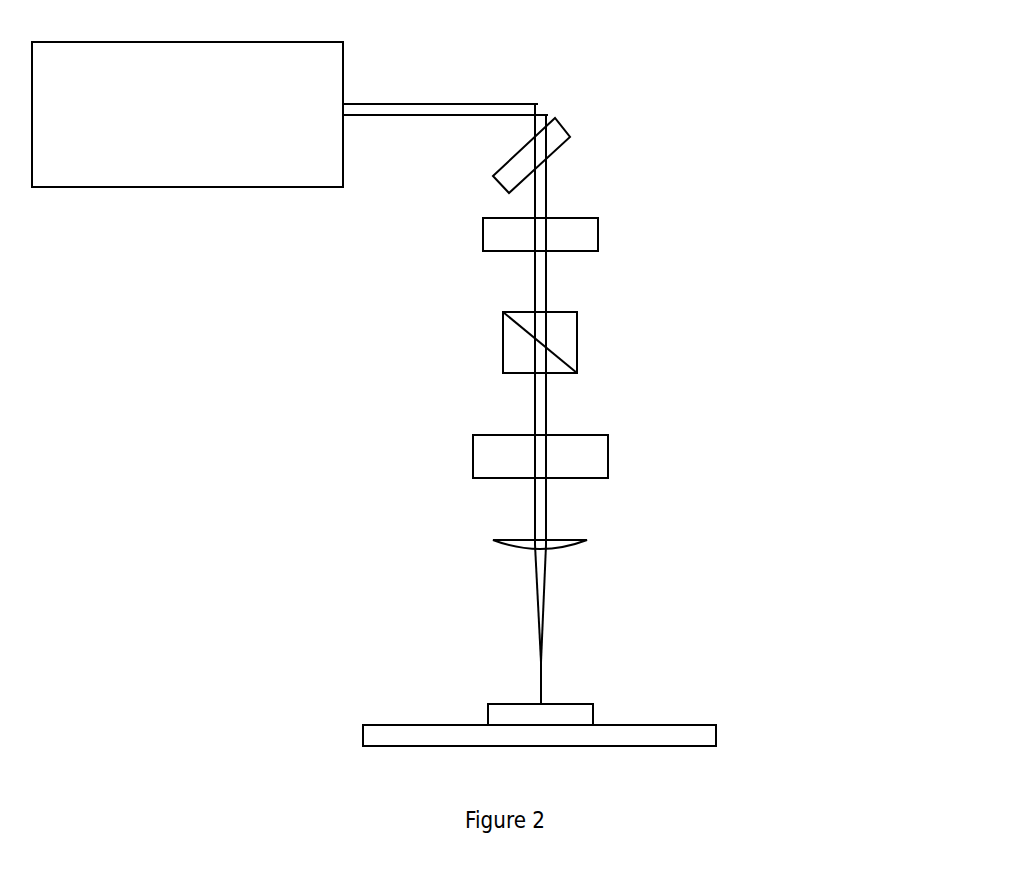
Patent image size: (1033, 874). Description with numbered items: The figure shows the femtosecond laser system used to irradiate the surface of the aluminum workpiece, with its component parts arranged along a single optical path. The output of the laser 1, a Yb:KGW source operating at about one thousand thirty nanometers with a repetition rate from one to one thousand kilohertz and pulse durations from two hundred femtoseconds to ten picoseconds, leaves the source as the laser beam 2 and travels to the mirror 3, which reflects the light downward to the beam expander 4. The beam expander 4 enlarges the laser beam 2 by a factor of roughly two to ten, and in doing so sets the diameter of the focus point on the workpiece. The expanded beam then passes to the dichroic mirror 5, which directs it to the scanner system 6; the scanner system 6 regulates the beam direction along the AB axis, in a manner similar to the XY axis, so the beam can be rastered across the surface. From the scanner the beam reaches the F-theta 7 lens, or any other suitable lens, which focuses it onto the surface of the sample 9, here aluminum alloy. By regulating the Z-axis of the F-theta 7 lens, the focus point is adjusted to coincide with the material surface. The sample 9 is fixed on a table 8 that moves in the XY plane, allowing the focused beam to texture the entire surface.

The laser 1 is at (187, 115).
The laser beam 2 is at (405, 103).
The mirror 3 is at (556, 117).
The beam expander 4 is at (573, 240).
The dichroic mirror 5 is at (560, 342).
The scanner system 6 is at (592, 457).
The F-theta lens 7 is at (575, 542).
The table 8 is at (695, 736).
The sample 9 is at (560, 715).